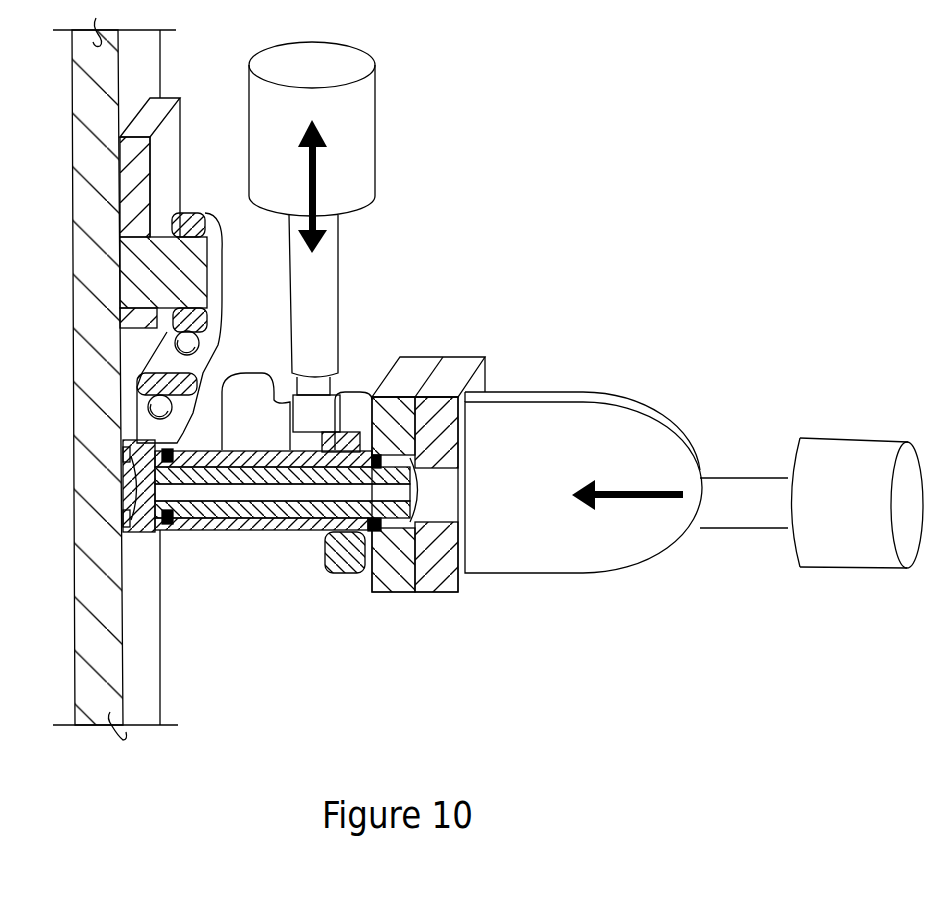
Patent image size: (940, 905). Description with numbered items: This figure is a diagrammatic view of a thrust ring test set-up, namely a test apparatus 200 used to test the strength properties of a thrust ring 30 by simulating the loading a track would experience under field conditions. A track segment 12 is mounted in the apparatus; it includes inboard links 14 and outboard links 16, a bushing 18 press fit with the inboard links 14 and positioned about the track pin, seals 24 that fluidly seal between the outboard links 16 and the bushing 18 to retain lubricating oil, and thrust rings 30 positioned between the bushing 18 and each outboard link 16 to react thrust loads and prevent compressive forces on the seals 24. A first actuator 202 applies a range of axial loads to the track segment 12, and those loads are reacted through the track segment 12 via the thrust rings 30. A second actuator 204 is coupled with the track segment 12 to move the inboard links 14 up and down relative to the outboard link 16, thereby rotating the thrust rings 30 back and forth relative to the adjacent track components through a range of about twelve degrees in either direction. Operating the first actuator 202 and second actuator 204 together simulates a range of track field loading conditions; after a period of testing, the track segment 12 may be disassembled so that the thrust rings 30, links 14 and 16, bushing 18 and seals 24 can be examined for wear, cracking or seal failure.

The track segment 12 is at (321, 612).
The inboard links 14 is at (248, 380).
The outboard links 16 is at (132, 433).
The bushing 18 is at (280, 524).
The seals 24 is at (168, 528).
The thrust rings 30 is at (363, 352).
The test apparatus 200 is at (574, 234).
The first actuator 202 is at (540, 558).
The second actuator 204 is at (97, 120).